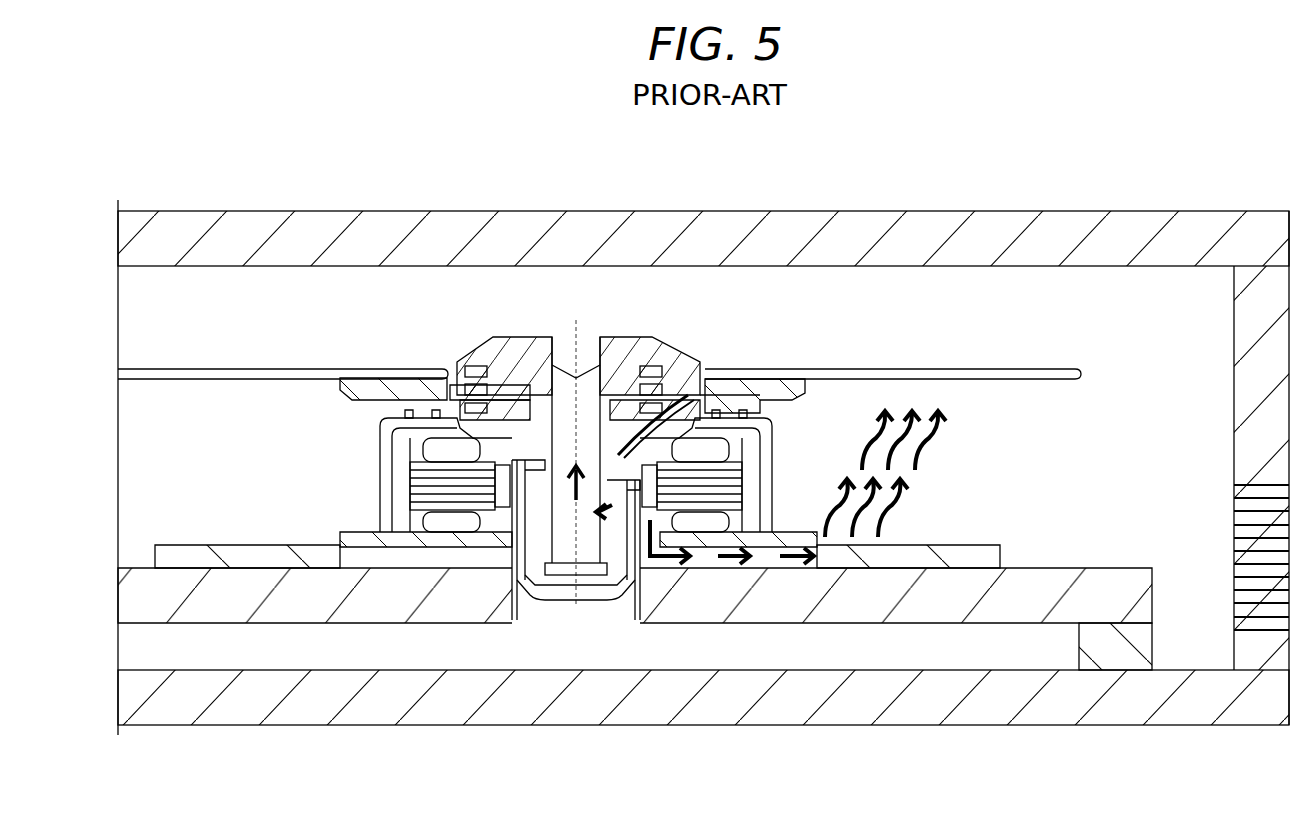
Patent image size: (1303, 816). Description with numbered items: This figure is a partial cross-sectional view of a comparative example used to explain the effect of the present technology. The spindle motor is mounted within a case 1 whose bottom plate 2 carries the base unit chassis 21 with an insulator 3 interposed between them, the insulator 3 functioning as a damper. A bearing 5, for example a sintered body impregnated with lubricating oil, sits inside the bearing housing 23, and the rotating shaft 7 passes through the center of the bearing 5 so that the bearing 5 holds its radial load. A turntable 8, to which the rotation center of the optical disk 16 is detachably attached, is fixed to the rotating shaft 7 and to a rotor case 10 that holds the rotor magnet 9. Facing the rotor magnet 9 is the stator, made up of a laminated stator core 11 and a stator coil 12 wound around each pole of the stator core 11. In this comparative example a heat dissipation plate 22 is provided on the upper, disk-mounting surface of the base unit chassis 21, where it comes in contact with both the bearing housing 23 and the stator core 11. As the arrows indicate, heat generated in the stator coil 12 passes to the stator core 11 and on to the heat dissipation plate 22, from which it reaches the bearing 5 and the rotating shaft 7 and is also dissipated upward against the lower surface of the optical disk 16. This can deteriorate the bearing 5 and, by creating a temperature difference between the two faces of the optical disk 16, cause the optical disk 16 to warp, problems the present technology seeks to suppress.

The case 1 is at (1138, 232).
The bottom plate 2 is at (1197, 713).
The insulator 3 is at (1120, 650).
The bearing 5 is at (612, 540).
The rotating shaft 7 is at (577, 335).
The turntable 8 is at (741, 378).
The rotor magnet 9 is at (398, 500).
The rotor case 10 is at (378, 505).
The stator core 11 is at (715, 540).
The stator coil 12 is at (712, 520).
The optical disk 16 is at (990, 369).
The base unit chassis 21 is at (1040, 587).
The heat dissipation plate 22 is at (948, 555).
The bearing housing 23 is at (534, 577).